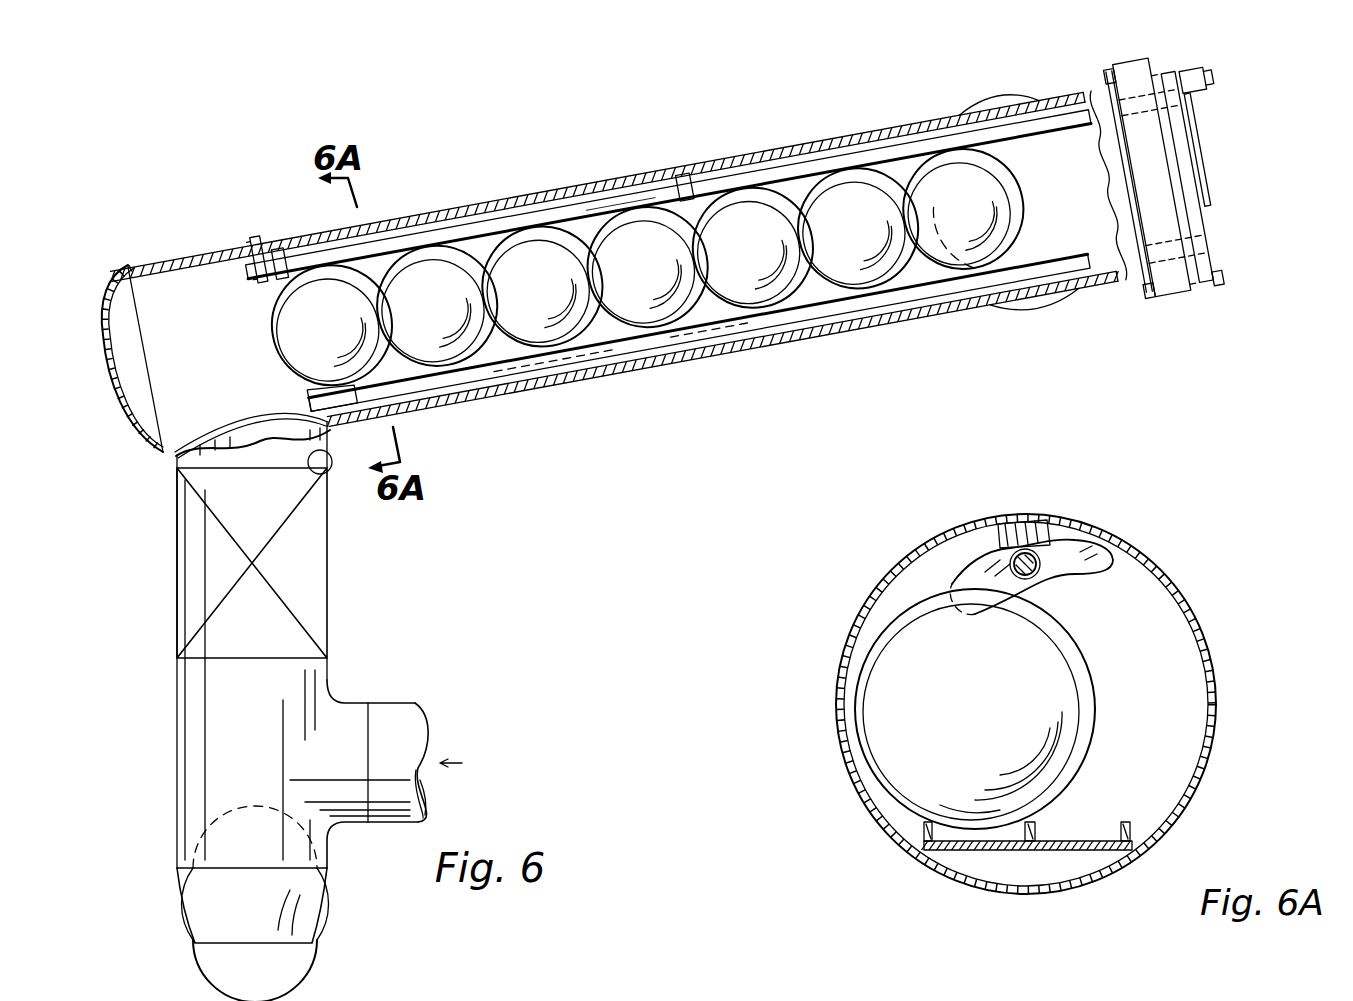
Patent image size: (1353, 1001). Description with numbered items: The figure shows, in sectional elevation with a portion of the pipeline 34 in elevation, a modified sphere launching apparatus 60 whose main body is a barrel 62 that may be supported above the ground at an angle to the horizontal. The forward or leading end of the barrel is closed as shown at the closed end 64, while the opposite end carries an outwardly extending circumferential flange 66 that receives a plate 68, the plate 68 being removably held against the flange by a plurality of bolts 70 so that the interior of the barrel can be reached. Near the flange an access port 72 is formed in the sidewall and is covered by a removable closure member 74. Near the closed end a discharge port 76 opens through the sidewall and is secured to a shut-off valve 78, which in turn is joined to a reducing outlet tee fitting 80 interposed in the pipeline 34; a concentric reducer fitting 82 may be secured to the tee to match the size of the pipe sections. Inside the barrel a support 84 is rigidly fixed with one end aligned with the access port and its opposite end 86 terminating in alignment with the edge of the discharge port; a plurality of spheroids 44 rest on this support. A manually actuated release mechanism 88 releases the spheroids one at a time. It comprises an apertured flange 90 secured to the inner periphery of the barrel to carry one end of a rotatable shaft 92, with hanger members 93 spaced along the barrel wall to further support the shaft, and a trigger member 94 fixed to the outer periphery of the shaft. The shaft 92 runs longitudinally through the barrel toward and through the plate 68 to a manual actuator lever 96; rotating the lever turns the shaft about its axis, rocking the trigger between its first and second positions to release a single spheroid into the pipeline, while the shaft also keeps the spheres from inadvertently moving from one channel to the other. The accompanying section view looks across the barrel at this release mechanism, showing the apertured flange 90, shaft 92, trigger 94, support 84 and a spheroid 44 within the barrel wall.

In FIG. 6, the pipeline 34 is at (398, 722).
In FIG. 6A, the spheroid 44 is at (880, 663).
In FIG. 6, the modified sphere launching apparatus 60 is at (416, 196).
In FIG. 6, the barrel 62 is at (548, 385).
In FIG. 6, the closed end 64 is at (122, 415).
In FIG. 6, the circumferential flange 66 is at (1163, 301).
In FIG. 6, the plate 68 is at (1187, 301).
In FIG. 6, the bolts 70 is at (1146, 66).
In FIG. 6, the access port 72 is at (1090, 209).
In FIG. 6, the closure member 74 is at (992, 100).
In FIG. 6, the discharge port 76 is at (326, 472).
In FIG. 6, the shut-off valve 78 is at (325, 582).
In FIG. 6, the reducing outlet tee fitting 80 is at (333, 718).
In FIG. 6, the concentric reducer fitting 82 is at (180, 885).
In FIG. 6, the support 84 is at (684, 353).
In FIG. 6A, the support 84 is at (1040, 852).
In FIG. 6, the opposite end of support 86 is at (305, 392).
In FIG. 6, the release mechanism 88 is at (550, 213).
In FIG. 6, the apertured flange 90 is at (258, 263).
In FIG. 6A, the apertured flange 90 is at (1022, 533).
In FIG. 6, the rotatable shaft 92 is at (638, 204).
In FIG. 6A, the rotatable shaft 92 is at (1035, 556).
In FIG. 6, the hanger members 93 is at (691, 180).
In FIG. 6, the trigger member 94 is at (280, 280).
In FIG. 6A, the trigger member 94 is at (1076, 547).
In FIG. 6, the manual actuator lever 96 is at (1203, 168).